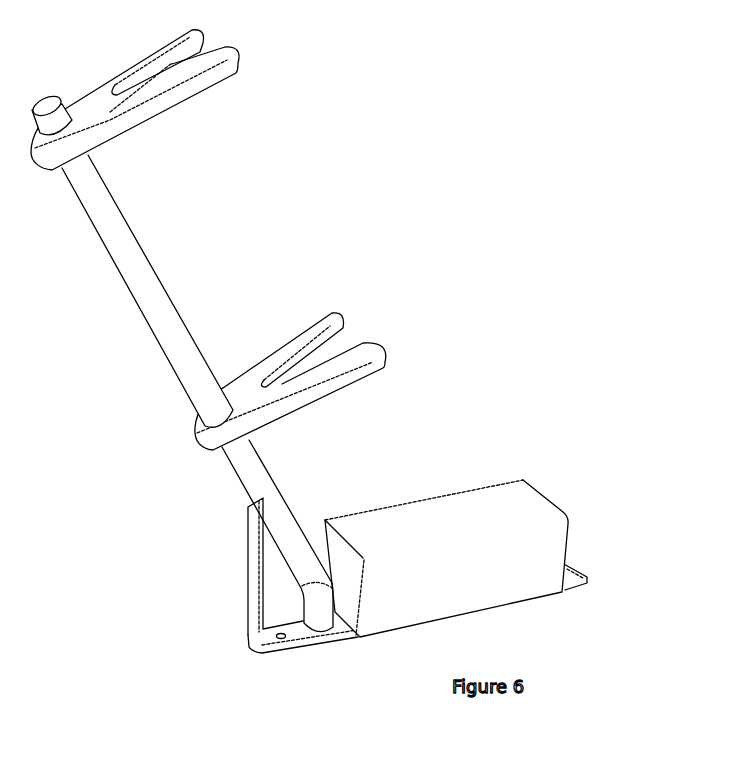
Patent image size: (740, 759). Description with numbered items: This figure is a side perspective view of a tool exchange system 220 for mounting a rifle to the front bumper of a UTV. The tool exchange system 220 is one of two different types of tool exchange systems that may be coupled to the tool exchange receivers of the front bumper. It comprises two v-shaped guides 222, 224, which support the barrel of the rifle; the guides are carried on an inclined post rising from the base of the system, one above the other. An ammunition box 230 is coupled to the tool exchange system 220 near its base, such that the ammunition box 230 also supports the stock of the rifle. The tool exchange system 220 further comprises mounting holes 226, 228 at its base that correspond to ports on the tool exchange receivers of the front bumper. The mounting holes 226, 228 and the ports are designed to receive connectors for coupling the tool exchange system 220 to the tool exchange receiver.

The tool exchange system 220 is at (359, 379).
The v-shaped guide 222 is at (160, 117).
The v-shaped guide 224 is at (268, 352).
The mounting hole 226 is at (562, 575).
The mounting hole 228 is at (284, 638).
The ammunition box 230 is at (469, 489).